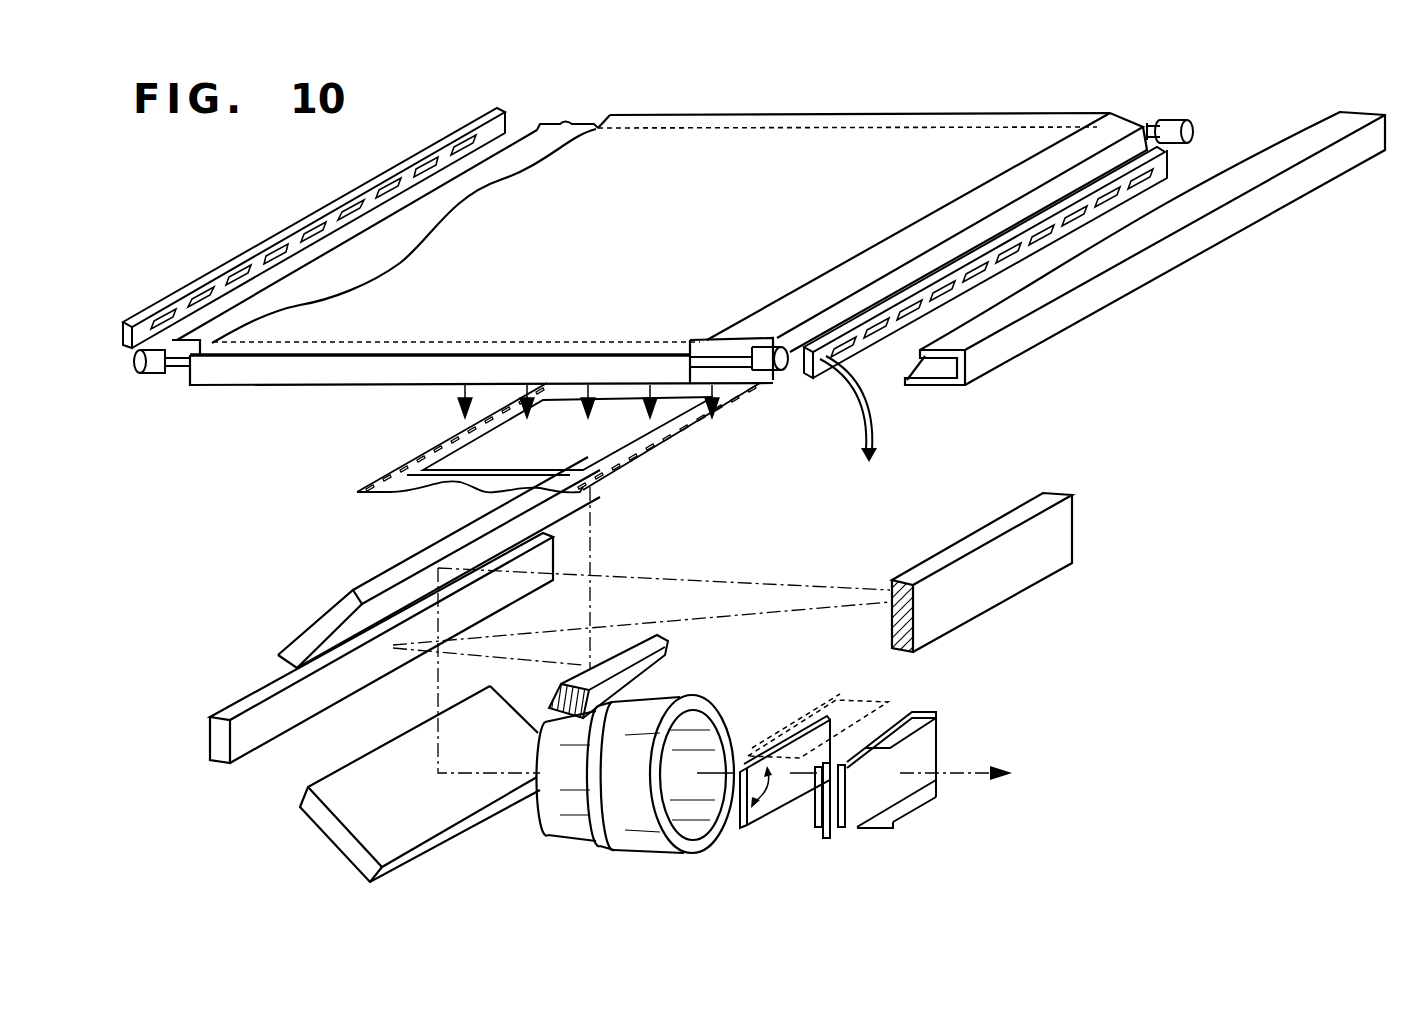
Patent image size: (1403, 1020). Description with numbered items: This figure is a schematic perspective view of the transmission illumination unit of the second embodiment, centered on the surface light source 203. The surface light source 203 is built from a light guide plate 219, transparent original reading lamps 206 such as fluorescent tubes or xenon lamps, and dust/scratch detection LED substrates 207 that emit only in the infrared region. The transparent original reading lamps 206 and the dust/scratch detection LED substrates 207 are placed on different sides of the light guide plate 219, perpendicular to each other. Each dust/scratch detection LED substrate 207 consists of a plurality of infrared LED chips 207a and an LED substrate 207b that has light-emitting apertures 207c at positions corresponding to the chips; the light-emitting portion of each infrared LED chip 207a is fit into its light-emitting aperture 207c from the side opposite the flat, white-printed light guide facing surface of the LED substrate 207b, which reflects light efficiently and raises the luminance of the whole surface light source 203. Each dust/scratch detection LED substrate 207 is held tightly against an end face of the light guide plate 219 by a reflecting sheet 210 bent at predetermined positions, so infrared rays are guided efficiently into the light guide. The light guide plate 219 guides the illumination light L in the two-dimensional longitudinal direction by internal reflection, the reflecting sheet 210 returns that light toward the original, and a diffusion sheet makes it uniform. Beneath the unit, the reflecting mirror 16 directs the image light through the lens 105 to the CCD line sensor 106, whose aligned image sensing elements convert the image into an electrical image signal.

The surface light source 203 is at (830, 100).
The transparent original reading lamp 206 is at (737, 362).
The dust/scratch detection LED substrate 207 is at (184, 283).
The infrared LED chip 207a is at (887, 333).
The LED substrate 207b is at (829, 382).
The light-emitting aperture 207c is at (507, 130).
The reflecting sheet 210 is at (1020, 140).
The light guide plate 219 is at (793, 342).
The reflecting mirror 16 is at (997, 590).
The lens 105 is at (553, 803).
The CCD line sensor 106 is at (853, 820).
The illumination light L is at (593, 520).